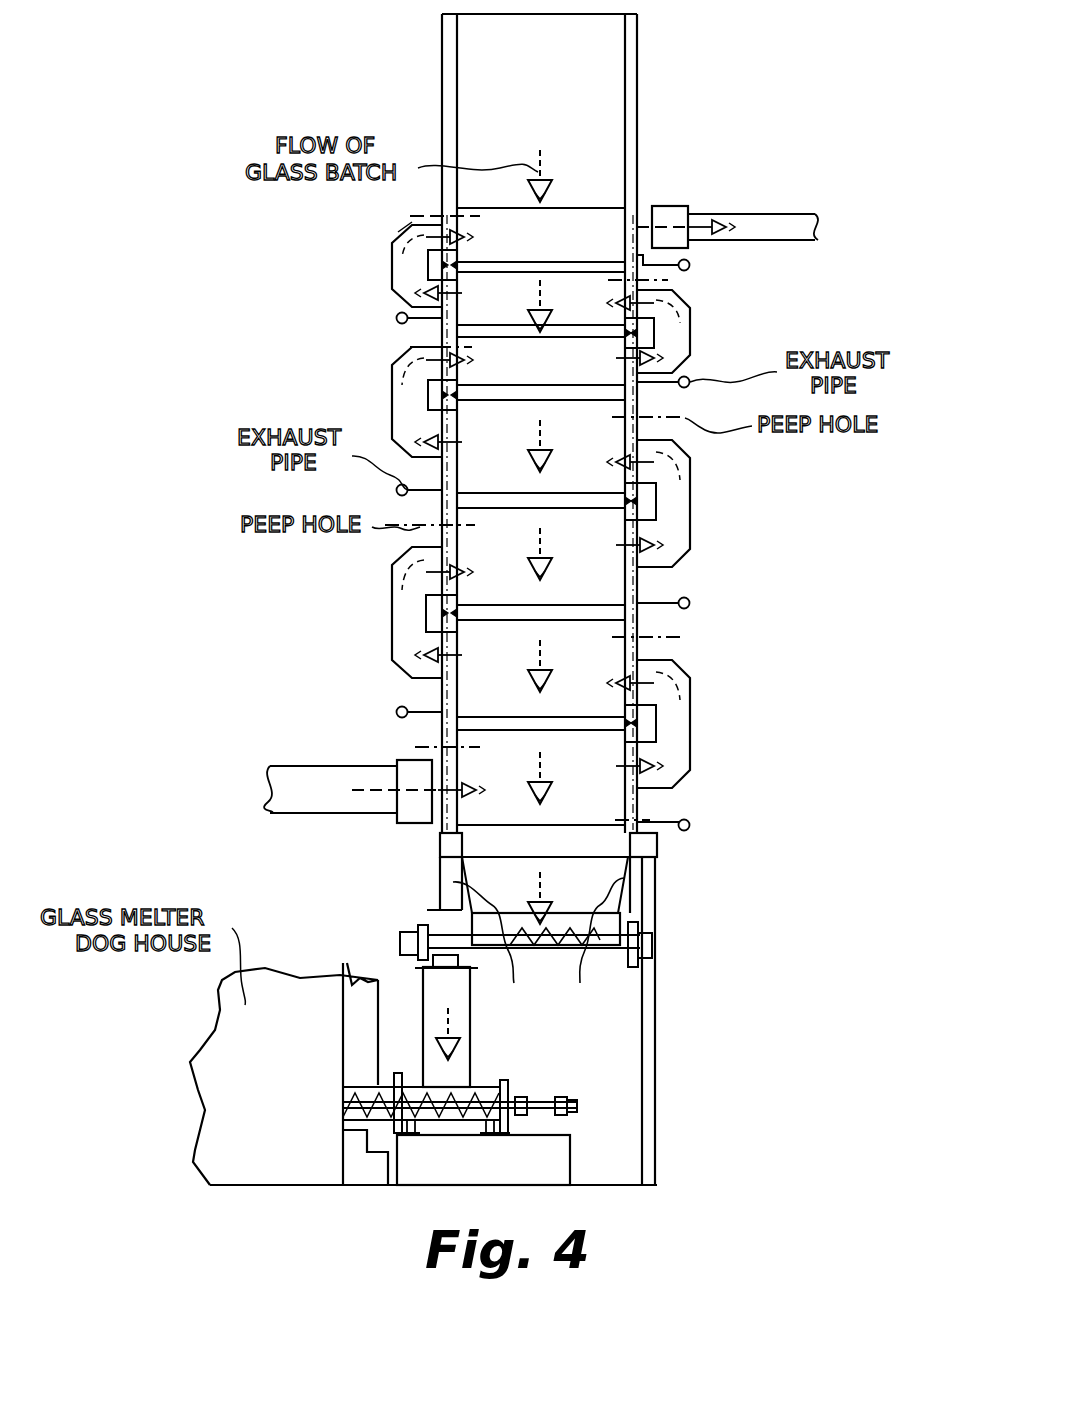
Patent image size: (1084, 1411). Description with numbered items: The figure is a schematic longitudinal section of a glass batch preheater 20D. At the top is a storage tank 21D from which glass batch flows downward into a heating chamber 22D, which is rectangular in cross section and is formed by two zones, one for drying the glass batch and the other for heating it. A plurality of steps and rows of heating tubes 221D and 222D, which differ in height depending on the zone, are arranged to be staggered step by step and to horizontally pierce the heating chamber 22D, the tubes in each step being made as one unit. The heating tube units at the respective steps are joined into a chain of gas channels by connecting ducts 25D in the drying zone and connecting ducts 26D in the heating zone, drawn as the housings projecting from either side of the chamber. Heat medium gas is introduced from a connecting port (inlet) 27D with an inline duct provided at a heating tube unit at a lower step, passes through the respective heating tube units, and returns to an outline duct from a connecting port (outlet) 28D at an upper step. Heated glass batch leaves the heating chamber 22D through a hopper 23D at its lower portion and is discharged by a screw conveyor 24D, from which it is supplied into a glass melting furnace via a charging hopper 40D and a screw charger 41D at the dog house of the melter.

The glass batch preheater 20D is at (440, 58).
The storage tank 21D is at (637, 50).
The heating tubes 221D is at (586, 222).
The heating tubes 222D is at (595, 590).
The heating chamber 22D is at (655, 630).
The ducts 25D is at (392, 265).
The ducts 26D is at (690, 495).
The connecting port (inlet) 27D is at (398, 825).
The connecting port (outlet) 28D is at (690, 205).
The lower hopper 23D is at (610, 876).
The screw conveyor 24D is at (640, 990).
The charging hopper 40D is at (470, 1010).
The screw charger 41D is at (490, 1085).